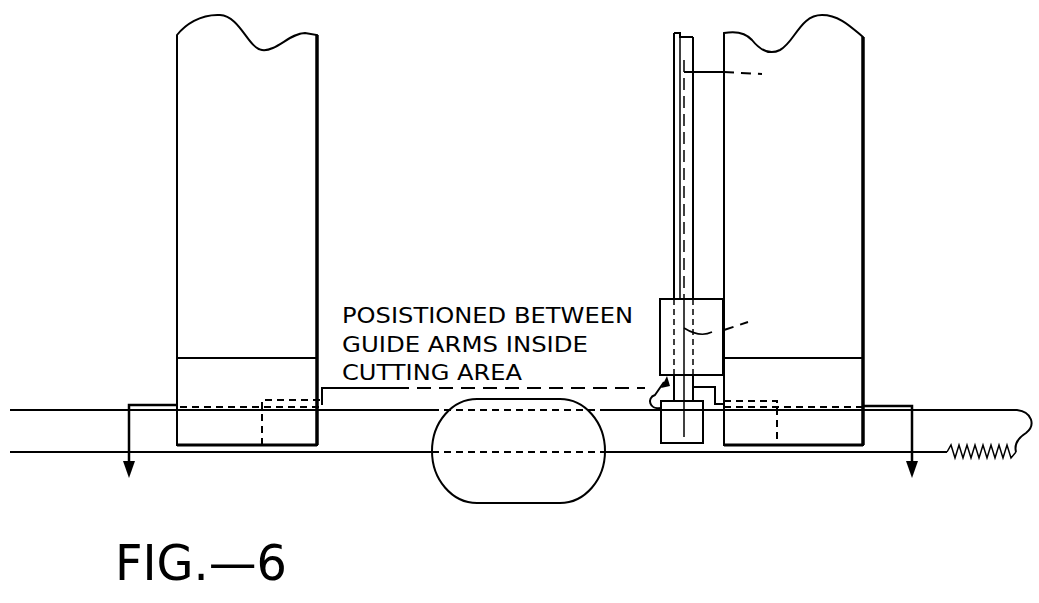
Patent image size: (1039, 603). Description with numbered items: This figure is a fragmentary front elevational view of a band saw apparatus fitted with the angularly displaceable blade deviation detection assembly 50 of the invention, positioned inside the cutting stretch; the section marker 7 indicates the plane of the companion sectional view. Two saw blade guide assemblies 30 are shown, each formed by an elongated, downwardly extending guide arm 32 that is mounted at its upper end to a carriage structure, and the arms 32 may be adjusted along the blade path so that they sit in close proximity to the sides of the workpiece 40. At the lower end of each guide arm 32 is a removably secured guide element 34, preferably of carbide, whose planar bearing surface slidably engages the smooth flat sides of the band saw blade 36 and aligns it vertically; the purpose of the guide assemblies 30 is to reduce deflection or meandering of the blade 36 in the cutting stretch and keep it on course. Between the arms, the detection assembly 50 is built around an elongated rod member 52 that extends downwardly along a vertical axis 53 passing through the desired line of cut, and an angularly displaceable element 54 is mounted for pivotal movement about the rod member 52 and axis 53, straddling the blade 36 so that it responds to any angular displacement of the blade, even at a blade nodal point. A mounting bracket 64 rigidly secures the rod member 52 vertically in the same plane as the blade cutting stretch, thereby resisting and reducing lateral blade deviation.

The section line 7- 7 is at (520, 453).
The guide assemblies 30 is at (712, 92).
The guide arms 32 is at (172, 190).
The guide elements 34 is at (278, 445).
The band saw blade 36 is at (928, 410).
The workpiece 40 is at (497, 503).
The blade deviation detection assembly 50 is at (655, 67).
The rod member 52 is at (673, 204).
The vertical axis 53 is at (770, 78).
The angularly displaceable element 54 is at (663, 441).
The mounting bracket 64 is at (660, 303).